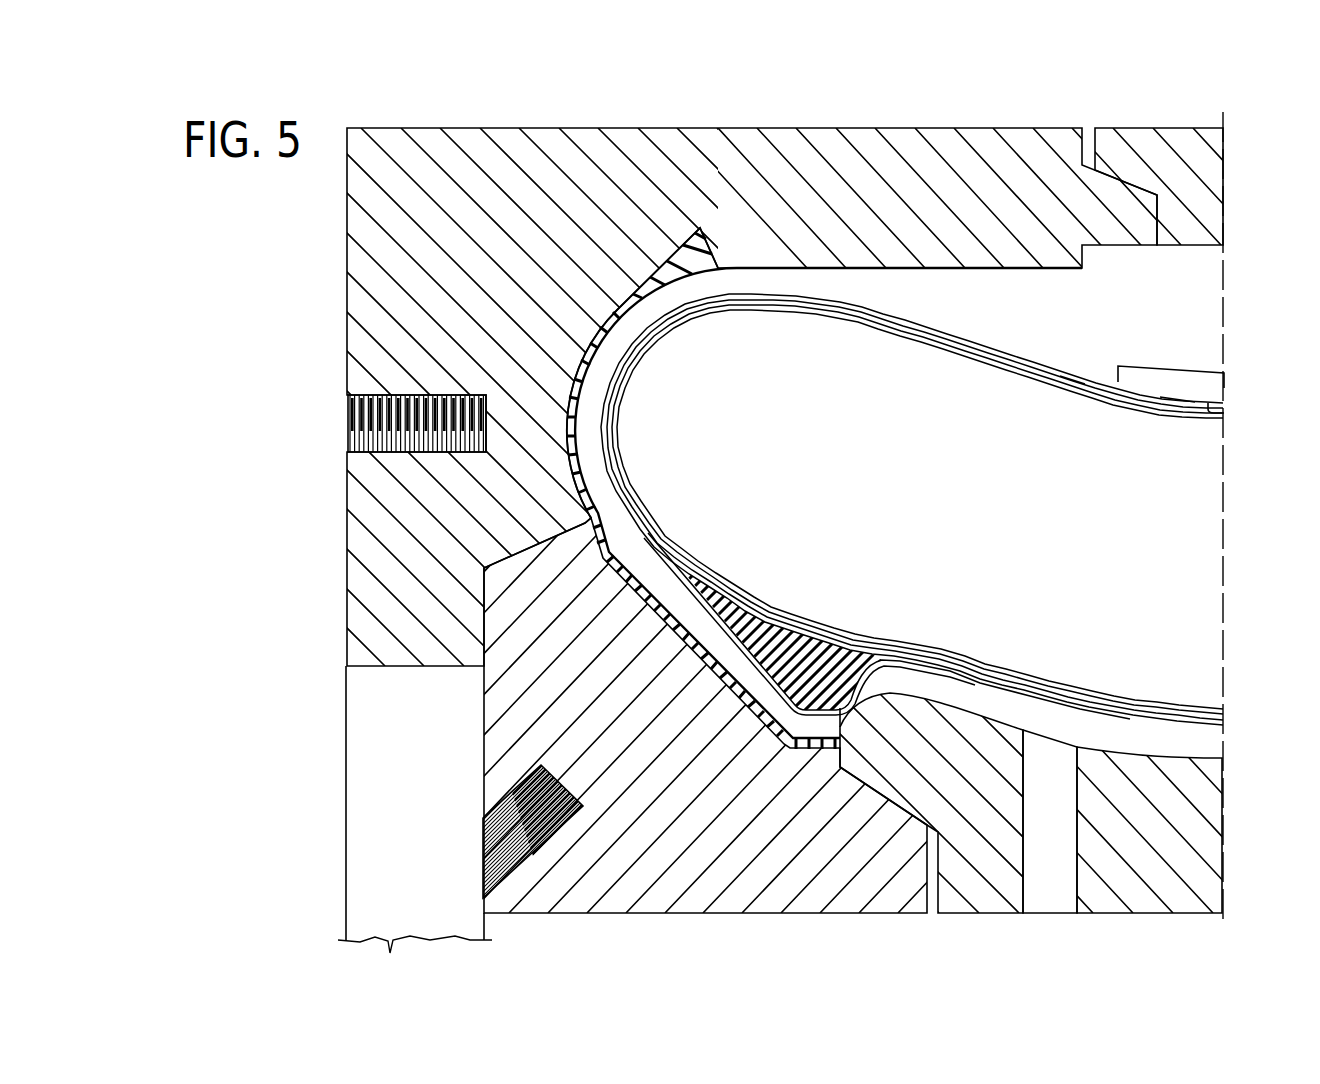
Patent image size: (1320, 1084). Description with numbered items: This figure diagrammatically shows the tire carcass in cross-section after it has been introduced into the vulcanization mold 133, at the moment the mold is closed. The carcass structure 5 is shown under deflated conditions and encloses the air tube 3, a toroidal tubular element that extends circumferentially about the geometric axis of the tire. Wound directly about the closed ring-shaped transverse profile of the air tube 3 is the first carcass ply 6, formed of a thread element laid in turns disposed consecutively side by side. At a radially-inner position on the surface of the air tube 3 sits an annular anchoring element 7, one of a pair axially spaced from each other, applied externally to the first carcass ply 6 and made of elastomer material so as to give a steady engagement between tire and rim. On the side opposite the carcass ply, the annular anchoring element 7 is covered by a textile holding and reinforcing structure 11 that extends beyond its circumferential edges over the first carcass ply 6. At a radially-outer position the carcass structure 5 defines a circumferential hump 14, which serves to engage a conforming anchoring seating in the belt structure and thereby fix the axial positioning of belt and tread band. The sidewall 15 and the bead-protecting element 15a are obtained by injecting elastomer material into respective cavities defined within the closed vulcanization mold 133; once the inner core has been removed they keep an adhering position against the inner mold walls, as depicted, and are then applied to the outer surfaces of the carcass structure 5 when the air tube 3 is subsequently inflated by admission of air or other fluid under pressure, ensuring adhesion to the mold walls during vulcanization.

The air tube 3 is at (1227, 412).
The carcass structure 5 is at (998, 339).
The first carcass ply 6 is at (1172, 394).
The annular anchoring element 7 is at (791, 652).
The textile holding and reinforcing structure 11 is at (1085, 377).
The circumferential hump 14 is at (1157, 372).
The sidewall 15 is at (580, 398).
The bead-protecting element 15a is at (647, 593).
The vulcanization mold 133 is at (505, 700).